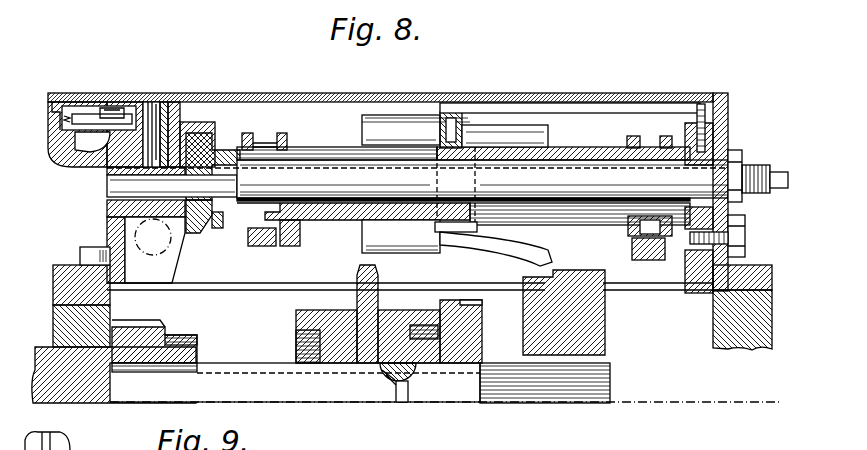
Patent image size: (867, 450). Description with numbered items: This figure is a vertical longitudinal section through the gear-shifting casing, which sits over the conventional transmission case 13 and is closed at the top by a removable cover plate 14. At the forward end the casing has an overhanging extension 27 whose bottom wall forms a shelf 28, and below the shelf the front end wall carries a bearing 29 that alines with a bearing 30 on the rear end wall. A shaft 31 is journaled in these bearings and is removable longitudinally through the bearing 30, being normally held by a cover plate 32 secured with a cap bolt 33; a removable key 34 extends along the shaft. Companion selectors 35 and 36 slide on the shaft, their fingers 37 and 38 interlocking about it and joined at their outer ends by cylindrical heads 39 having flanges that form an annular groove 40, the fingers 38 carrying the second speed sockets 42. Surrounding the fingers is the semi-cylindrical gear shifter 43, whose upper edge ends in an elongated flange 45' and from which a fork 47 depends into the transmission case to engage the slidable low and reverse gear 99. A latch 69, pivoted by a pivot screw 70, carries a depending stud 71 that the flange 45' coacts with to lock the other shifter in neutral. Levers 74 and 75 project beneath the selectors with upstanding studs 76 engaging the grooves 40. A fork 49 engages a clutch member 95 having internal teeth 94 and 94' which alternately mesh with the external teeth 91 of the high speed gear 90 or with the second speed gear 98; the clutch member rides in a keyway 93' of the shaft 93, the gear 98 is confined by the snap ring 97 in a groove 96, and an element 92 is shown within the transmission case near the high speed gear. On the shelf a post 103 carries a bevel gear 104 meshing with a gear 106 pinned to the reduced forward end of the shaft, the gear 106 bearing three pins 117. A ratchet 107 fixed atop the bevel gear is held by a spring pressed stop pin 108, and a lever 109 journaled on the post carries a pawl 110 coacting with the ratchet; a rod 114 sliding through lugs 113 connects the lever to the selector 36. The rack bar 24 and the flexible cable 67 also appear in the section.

In FIG. 8, the transmission case 13 is at (762, 314).
In FIG. 8, the cover plate 14 is at (340, 94).
In FIG. 9, the cover plate 14 is at (655, 449).
In FIG. 8, the rack bar 24 is at (157, 258).
In FIG. 8, the overhanging extension 27 is at (60, 147).
In FIG. 8, the shelf 28 is at (88, 166).
In FIG. 8, the bearing 29 is at (187, 228).
In FIG. 8, the bearing 30 is at (727, 138).
In FIG. 8, the shaft 31 is at (421, 186).
In FIG. 8, the cover plate 32 is at (728, 97).
In FIG. 8, the cap bolt 33 is at (745, 238).
In FIG. 8, the key 34 is at (568, 148).
In FIG. 8, the selector 35 is at (281, 133).
In FIG. 8, the selector 36 is at (631, 133).
In FIG. 8, the fingers 37 is at (310, 147).
In FIG. 8, the fingers 38 is at (578, 153).
In FIG. 8, the cylindrical head 39 is at (265, 143).
In FIG. 8, the annular groove 40 is at (664, 143).
In FIG. 8, the second speed sockets 42 is at (537, 143).
In FIG. 8, the gear shifter 43 is at (443, 225).
In FIG. 8, the elongated flange 45' is at (416, 107).
In FIG. 9, the elongated flange 45' is at (688, 430).
In FIG. 8, the fork 47 is at (490, 243).
In FIG. 8, the fork 49 is at (374, 276).
In FIG. 8, the flexible cable 67 is at (780, 176).
In FIG. 8, the latch 69 is at (559, 112).
In FIG. 9, the latch 69 is at (560, 449).
In FIG. 8, the pivot screw 70 is at (691, 107).
In FIG. 8, the depending stud 71 is at (451, 128).
In FIG. 9, the depending stud 71 is at (548, 449).
In FIG. 8, the lever 74 is at (633, 250).
In FIG. 8, the lever 75 is at (285, 247).
In FIG. 8, the upstanding studs 76 is at (648, 221).
In FIG. 8, the high speed gear 90 is at (152, 327).
In FIG. 8, the external teeth 91 is at (197, 335).
In FIG. 8, the base block 92 is at (137, 392).
In FIG. 8, the shaft 93 is at (445, 393).
In FIG. 8, the keyway 93' is at (381, 412).
In FIG. 8, the internal teeth 94 is at (302, 336).
In FIG. 8, the internal teeth 94' is at (409, 327).
In FIG. 8, the clutch member 95 is at (388, 382).
In FIG. 8, the groove 96 is at (408, 392).
In FIG. 8, the annular snap ring 97 is at (412, 372).
In FIG. 8, the second speed gear 98 is at (469, 338).
In FIG. 8, the low and reverse gear 99 is at (596, 333).
In FIG. 8, the post 103 is at (150, 100).
In FIG. 8, the bevel gear 104 is at (190, 128).
In FIG. 9, the bevel gear 104 is at (700, 446).
In FIG. 8, the gear 106 is at (200, 143).
In FIG. 8, the ratchet 107 is at (176, 110).
In FIG. 9, the ratchet 107 is at (591, 449).
In FIG. 8, the spring pressed stop pin 108 is at (92, 118).
In FIG. 8, the lever 109 is at (137, 104).
In FIG. 9, the lever 109 is at (606, 449).
In FIG. 9, the pawl 110 is at (631, 449).
In FIG. 9, the lugs 113 is at (503, 449).
In FIG. 9, the rod 114 is at (527, 449).
In FIG. 8, the pins 117 is at (218, 230).